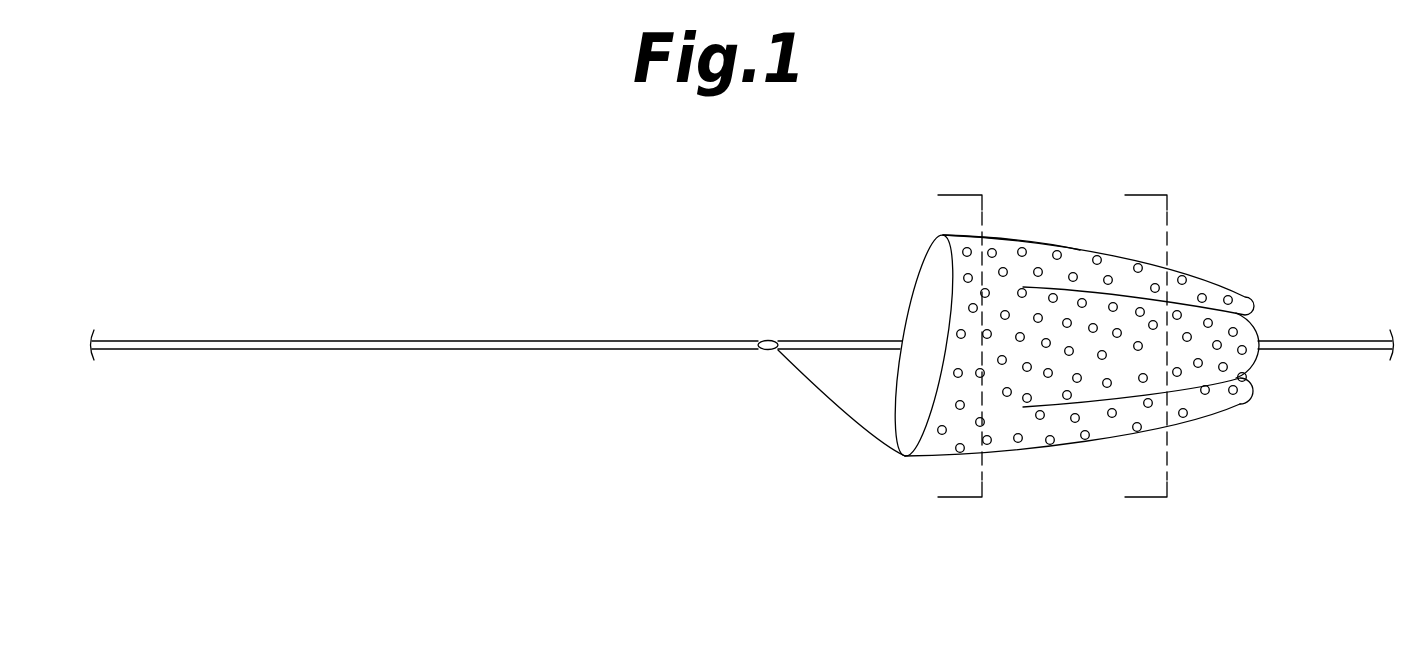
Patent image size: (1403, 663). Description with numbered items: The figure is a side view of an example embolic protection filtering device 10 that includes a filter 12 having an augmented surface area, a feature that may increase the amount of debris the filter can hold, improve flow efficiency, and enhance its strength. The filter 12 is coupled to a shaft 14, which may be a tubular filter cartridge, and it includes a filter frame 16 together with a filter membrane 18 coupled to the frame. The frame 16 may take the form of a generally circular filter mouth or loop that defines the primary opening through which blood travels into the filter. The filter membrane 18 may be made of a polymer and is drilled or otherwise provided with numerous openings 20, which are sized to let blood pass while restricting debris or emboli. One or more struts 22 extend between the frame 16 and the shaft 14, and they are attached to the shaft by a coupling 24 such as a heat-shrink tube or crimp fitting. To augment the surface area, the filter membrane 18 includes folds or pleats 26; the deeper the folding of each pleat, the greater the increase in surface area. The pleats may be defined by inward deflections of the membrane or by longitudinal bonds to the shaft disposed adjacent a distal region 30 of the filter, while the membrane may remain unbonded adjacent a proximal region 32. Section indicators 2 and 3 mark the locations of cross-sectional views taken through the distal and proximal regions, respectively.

The filtering device 10 is at (472, 220).
The filter 12 is at (1032, 183).
The shaft 14 is at (308, 340).
The filter frame 16 is at (897, 392).
The filter membrane 18 is at (1003, 443).
The openings 20 is at (1206, 294).
The struts 22 is at (860, 435).
The coupling 24 is at (765, 340).
The pleats 26 is at (1193, 392).
The distal region 30 is at (1181, 268).
The proximal region 32 is at (995, 240).
The section line 2- 2 is at (1118, 347).
The section line 3- 3 is at (934, 347).